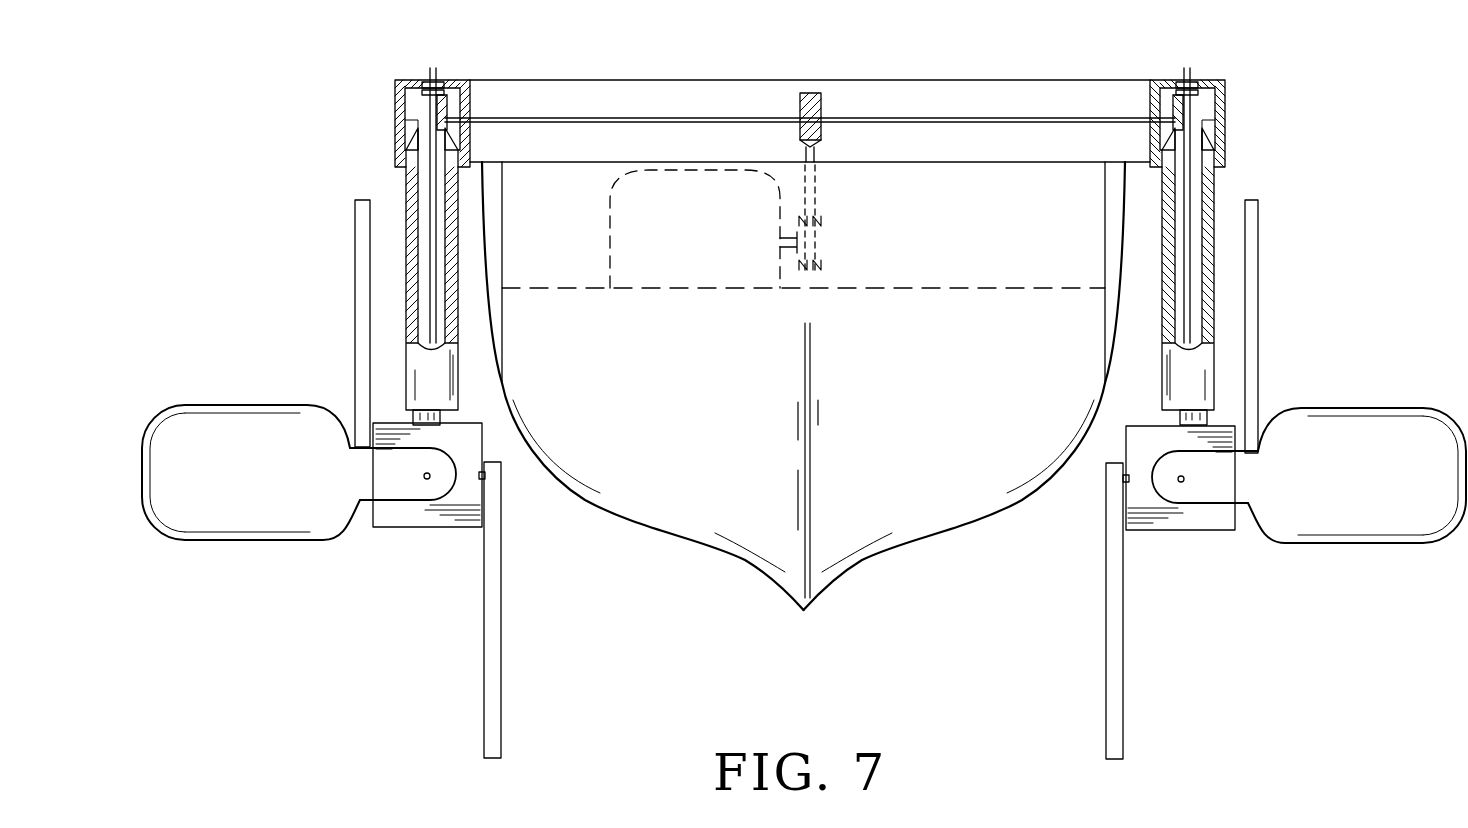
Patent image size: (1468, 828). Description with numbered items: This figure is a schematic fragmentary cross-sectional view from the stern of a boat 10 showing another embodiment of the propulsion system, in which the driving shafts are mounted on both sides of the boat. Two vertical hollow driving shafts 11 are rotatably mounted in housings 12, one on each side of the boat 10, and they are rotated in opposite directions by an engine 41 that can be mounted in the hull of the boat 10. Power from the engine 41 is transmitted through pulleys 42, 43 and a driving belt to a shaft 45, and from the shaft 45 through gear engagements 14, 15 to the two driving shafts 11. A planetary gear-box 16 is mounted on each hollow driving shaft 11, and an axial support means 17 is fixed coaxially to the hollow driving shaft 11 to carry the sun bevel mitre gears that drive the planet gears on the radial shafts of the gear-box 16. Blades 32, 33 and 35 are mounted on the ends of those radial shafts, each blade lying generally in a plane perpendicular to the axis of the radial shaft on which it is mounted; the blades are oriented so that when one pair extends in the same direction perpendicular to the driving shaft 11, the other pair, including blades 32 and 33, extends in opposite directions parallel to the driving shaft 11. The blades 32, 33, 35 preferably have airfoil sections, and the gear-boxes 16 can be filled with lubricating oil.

The boat 10 is at (657, 510).
The vertical hollow driving shaft 11 is at (422, 190).
The housing 12 is at (407, 204).
The gear engagement 14 is at (417, 143).
The gear engagement 15 is at (453, 95).
The planetary gear-box 16 is at (430, 528).
The axial support means 17 is at (430, 102).
The blade 32 is at (363, 250).
The blade 33 is at (1120, 712).
The blade 35 is at (227, 537).
The engine 41 is at (697, 278).
The pulley 42 is at (818, 242).
The pulley 43 is at (800, 102).
The shaft 45 is at (860, 118).